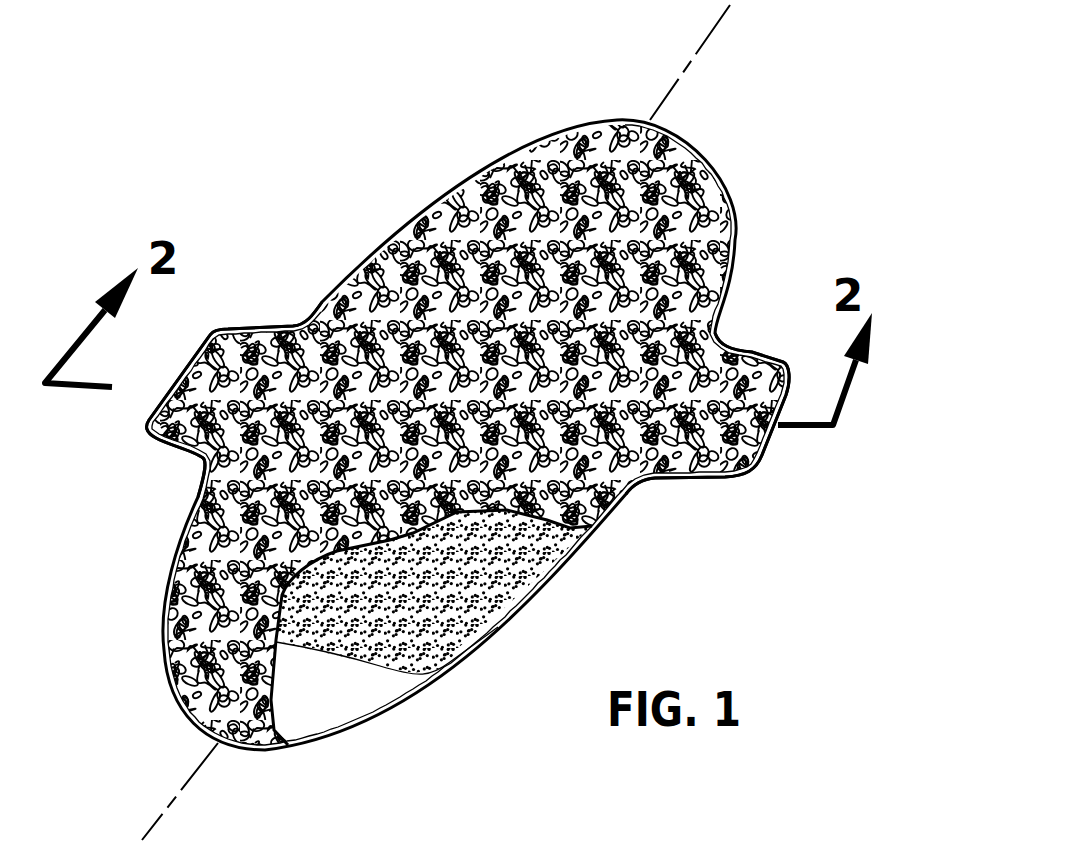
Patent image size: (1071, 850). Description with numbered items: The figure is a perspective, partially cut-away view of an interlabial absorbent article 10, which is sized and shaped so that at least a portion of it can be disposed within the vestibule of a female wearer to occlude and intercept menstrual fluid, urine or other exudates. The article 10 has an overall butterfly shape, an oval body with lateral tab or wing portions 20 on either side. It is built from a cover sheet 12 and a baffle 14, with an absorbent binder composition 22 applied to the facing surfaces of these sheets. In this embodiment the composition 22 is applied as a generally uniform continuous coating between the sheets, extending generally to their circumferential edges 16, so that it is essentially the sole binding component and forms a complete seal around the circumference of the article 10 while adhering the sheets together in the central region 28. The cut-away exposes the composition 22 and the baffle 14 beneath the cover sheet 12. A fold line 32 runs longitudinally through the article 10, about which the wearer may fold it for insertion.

The interlabial absorbent article 10 is at (460, 422).
The cover sheet 12 is at (728, 213).
The baffle 14 is at (380, 688).
The circumferential edges 16 is at (382, 250).
The lateral tab or wing portions 20 is at (263, 345).
The absorbent binder composition 22 is at (493, 620).
The central region 28 is at (468, 435).
The fold line 32 is at (688, 62).